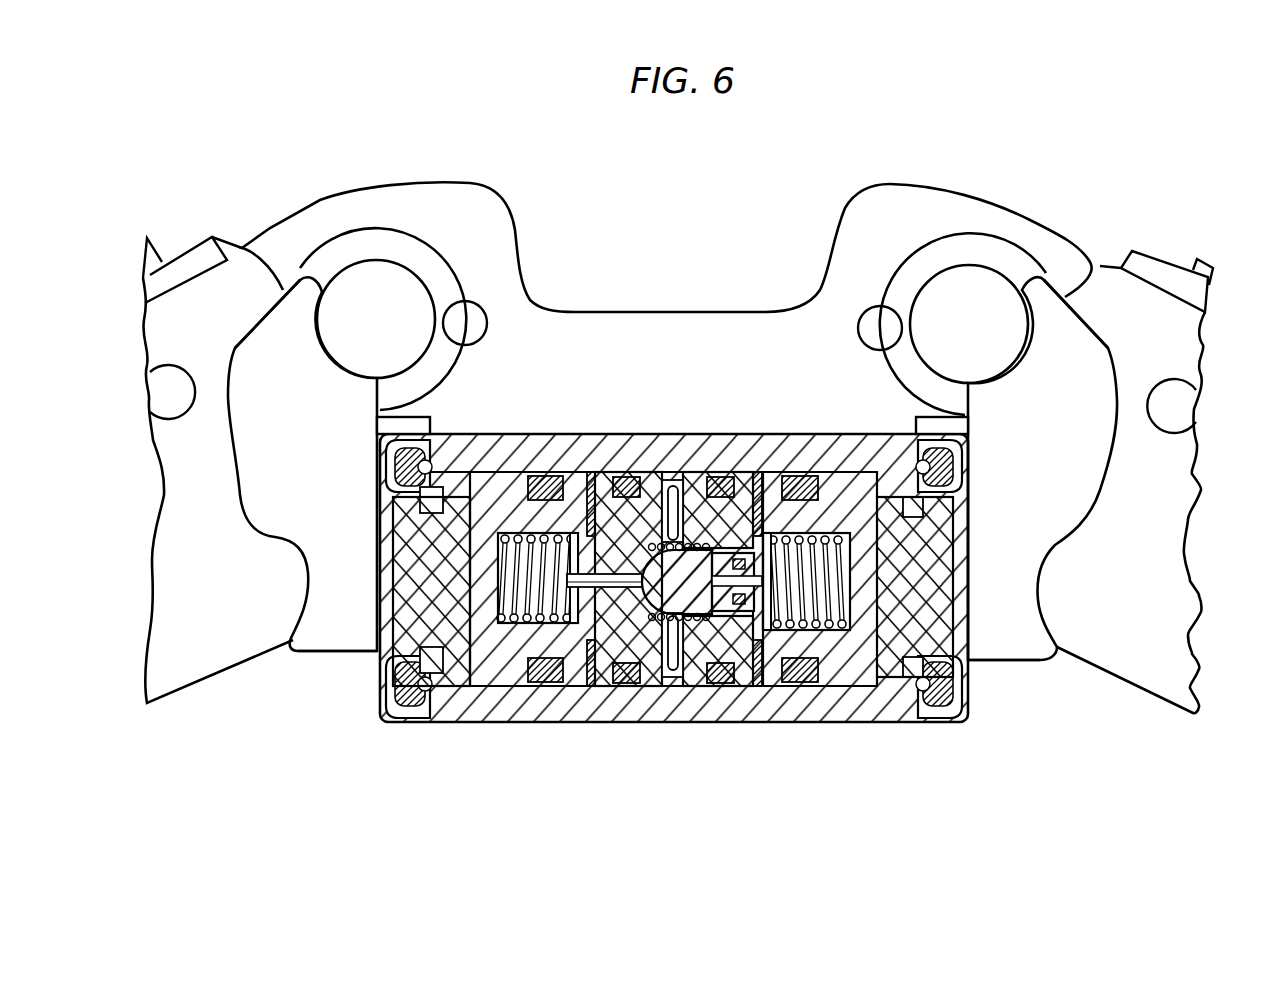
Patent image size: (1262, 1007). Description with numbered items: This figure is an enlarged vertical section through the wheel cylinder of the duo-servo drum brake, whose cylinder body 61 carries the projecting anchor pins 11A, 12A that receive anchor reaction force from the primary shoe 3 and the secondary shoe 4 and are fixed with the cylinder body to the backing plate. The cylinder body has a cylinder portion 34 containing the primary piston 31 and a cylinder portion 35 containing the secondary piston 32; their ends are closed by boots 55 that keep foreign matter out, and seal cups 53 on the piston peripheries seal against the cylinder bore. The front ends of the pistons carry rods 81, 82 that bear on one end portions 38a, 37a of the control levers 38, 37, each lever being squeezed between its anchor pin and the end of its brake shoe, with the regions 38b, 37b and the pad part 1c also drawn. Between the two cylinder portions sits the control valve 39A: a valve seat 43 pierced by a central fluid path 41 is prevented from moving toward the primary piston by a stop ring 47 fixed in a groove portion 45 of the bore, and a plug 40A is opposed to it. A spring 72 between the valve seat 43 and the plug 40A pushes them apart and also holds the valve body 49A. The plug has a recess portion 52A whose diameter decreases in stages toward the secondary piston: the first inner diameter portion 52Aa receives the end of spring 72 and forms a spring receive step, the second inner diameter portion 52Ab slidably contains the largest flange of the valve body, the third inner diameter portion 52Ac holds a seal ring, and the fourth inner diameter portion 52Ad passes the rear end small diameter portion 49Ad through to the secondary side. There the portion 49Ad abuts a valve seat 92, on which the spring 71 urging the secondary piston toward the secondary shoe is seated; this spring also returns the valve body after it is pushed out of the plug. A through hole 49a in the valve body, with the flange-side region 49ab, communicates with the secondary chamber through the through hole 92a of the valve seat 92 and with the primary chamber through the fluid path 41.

The cylinder body 61 is at (470, 217).
The anchor pin 11A is at (328, 225).
The anchor pin 12A is at (983, 235).
The control lever 38 is at (280, 360).
The one end portion of control lever 38a is at (322, 612).
The claw side face 38b is at (248, 423).
The control lever 37 is at (1040, 390).
The one end portion of control lever 37a is at (1033, 612).
The claw side face 37b is at (1108, 351).
The pad backing plate 1c is at (1156, 261).
The primary shoe 3 is at (173, 580).
The secondary shoe 4 is at (1161, 482).
The cylinder portion 34 is at (588, 418).
The cylinder portion 35 is at (915, 420).
The primary piston 31 is at (386, 660).
The secondary piston 32 is at (950, 660).
The boot 55 is at (396, 703).
The rod 81 is at (385, 573).
The rod 82 is at (960, 567).
The spring 71 is at (520, 622).
The rear end small diameter portion 49Ad is at (772, 548).
The fluid path 41 is at (598, 660).
The stop ring 47 is at (590, 472).
The second inner diameter portion 52Ab is at (742, 660).
The first inner diameter portion 52Aa is at (665, 472).
The third inner diameter portion 52Ac is at (683, 472).
The spring 72 is at (642, 472).
The groove portion 45 is at (614, 472).
The seal cup 53 is at (545, 684).
The valve seat 43 is at (655, 650).
The valve body 49A is at (692, 640).
The through hole 49a is at (697, 618).
The bearing balls 49ab is at (714, 620).
The recess portion 52A is at (730, 688).
The control valve 39A is at (668, 688).
The fourth inner diameter portion 52Ad is at (780, 688).
The plug 40A is at (778, 472).
The valve seat 92 is at (820, 472).
The through hole 92a is at (818, 688).